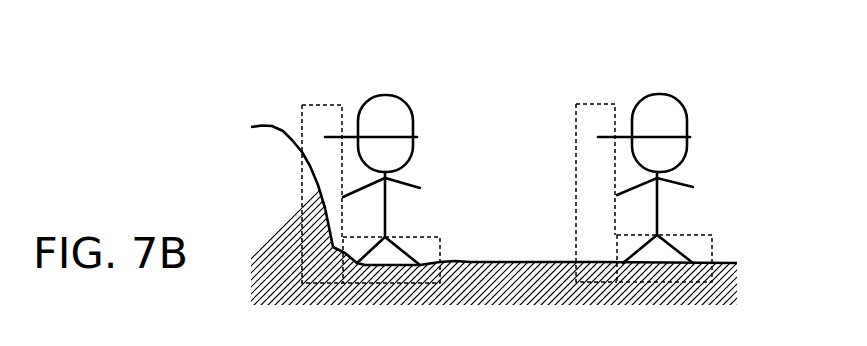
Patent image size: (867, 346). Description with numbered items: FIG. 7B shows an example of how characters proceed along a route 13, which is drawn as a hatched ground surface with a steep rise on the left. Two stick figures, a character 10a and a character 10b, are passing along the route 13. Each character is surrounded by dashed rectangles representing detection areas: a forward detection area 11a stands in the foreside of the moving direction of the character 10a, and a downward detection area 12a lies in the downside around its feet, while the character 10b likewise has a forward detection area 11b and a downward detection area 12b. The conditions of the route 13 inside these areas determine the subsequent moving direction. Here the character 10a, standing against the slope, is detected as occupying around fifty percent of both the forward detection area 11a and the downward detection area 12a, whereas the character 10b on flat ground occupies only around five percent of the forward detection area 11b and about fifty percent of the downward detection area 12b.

The character 10a is at (402, 107).
The character 10b is at (677, 107).
The forward detection area 11a is at (317, 105).
The forward detection area 11b is at (592, 104).
The downward detection area 12a is at (422, 237).
The downward detection area 12b is at (690, 236).
The route 13 is at (725, 280).